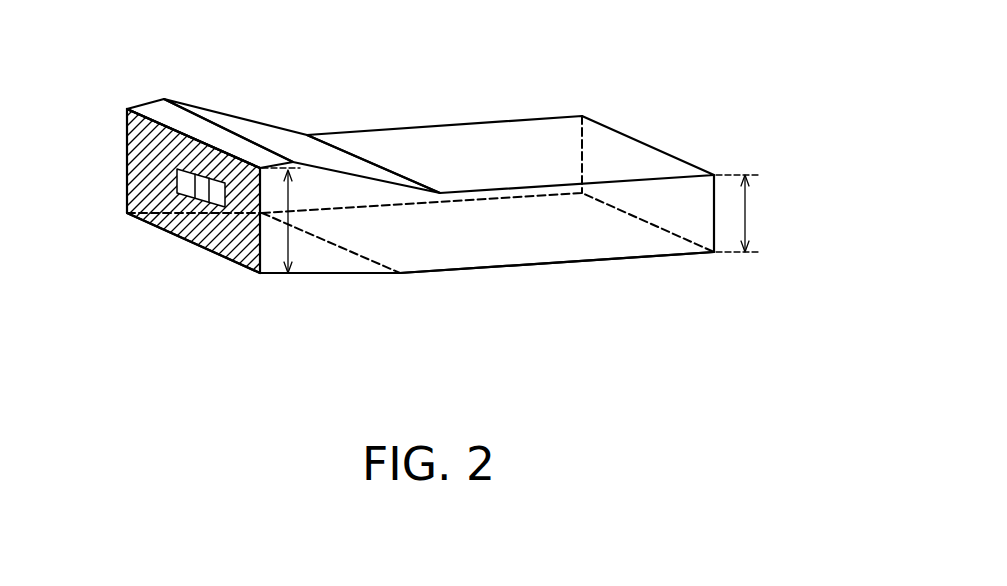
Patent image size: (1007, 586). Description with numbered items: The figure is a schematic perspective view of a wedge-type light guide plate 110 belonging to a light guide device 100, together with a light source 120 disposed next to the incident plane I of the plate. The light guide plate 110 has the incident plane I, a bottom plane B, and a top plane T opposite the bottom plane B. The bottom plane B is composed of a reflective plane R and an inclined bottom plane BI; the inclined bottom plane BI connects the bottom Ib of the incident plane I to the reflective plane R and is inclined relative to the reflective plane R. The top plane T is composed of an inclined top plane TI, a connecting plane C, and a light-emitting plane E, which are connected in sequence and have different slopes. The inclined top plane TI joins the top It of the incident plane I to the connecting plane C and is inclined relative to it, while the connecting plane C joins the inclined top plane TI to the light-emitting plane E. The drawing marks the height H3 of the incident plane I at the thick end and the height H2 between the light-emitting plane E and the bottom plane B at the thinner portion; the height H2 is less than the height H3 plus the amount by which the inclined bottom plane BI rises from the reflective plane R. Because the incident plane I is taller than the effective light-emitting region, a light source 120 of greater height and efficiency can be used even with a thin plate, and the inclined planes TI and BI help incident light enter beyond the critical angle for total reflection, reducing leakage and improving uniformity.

The light guide device 100 is at (765, 312).
The light guide plate 110 is at (655, 128).
The light source 120 is at (192, 208).
The incident plane I is at (148, 160).
The top of the incident plane It is at (146, 121).
The bottom of the incident plane Ib is at (222, 262).
The top plane T is at (363, 57).
The inclined top plane TI is at (193, 124).
The connecting plane C is at (263, 133).
The light-emitting plane E is at (392, 137).
The bottom plane B is at (542, 316).
The inclined bottom plane BI is at (330, 260).
The reflective plane R is at (588, 247).
The height of the incident plane H3 is at (292, 220).
The height between the light-emitting plane and the bottom plane H2 is at (749, 213).